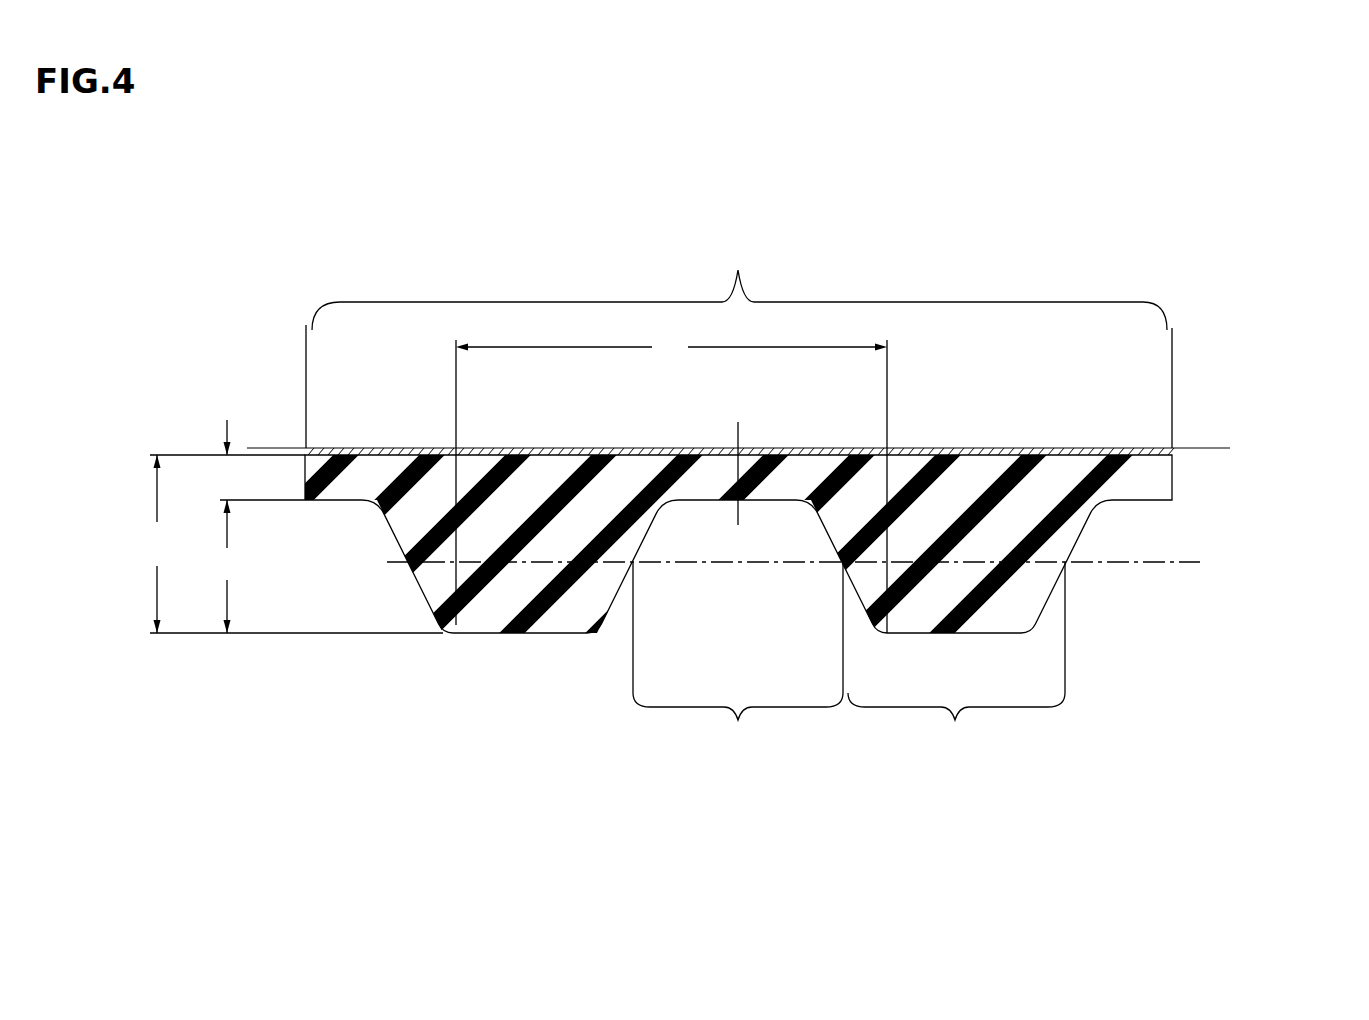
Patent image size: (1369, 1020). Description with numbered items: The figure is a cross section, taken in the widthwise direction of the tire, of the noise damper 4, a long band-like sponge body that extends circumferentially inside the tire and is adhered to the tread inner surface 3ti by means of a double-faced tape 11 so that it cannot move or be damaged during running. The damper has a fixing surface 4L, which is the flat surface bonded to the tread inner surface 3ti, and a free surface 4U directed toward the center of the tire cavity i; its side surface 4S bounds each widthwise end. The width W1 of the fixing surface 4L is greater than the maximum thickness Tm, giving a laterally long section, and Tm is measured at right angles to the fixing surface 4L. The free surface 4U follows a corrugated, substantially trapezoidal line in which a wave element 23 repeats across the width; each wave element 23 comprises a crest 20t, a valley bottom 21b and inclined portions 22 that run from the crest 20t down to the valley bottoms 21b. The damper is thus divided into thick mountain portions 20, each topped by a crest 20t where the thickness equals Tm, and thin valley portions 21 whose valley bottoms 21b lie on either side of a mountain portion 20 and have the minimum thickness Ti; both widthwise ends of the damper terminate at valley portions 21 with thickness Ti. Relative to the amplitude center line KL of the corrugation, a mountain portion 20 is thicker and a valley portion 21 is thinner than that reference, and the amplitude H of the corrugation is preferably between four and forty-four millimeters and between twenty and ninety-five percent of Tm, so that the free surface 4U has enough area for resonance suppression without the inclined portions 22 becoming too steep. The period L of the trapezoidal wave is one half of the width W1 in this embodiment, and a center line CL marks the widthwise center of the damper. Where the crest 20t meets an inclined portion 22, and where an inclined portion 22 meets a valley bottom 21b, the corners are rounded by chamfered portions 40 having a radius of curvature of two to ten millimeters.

The noise damper 4 is at (1087, 608).
The side surface 4S is at (307, 470).
The fixing surface 4L is at (1000, 450).
The free surface 4U is at (507, 634).
The double-faced tape 11 is at (1083, 450).
The tread inner surface 3ti is at (1200, 452).
The mountain portion 20 is at (954, 629).
The crest 20t is at (578, 634).
The valley portion 21 is at (738, 629).
The valley bottom 21b is at (354, 500).
The inclined portion 22 is at (404, 552).
The wave element 23 is at (435, 612).
The chamfered portion 40 is at (404, 550).
The tire cavity i is at (698, 669).
The amplitude center line KL is at (1177, 563).
The center line CL is at (738, 458).
The width of the fixing surface W1 is at (739, 343).
The period of the trapezoidal wave L is at (671, 483).
The minimum value of thickness Ti is at (260, 460).
The maximum value of thickness Tm is at (279, 544).
The amplitude H is at (228, 566).